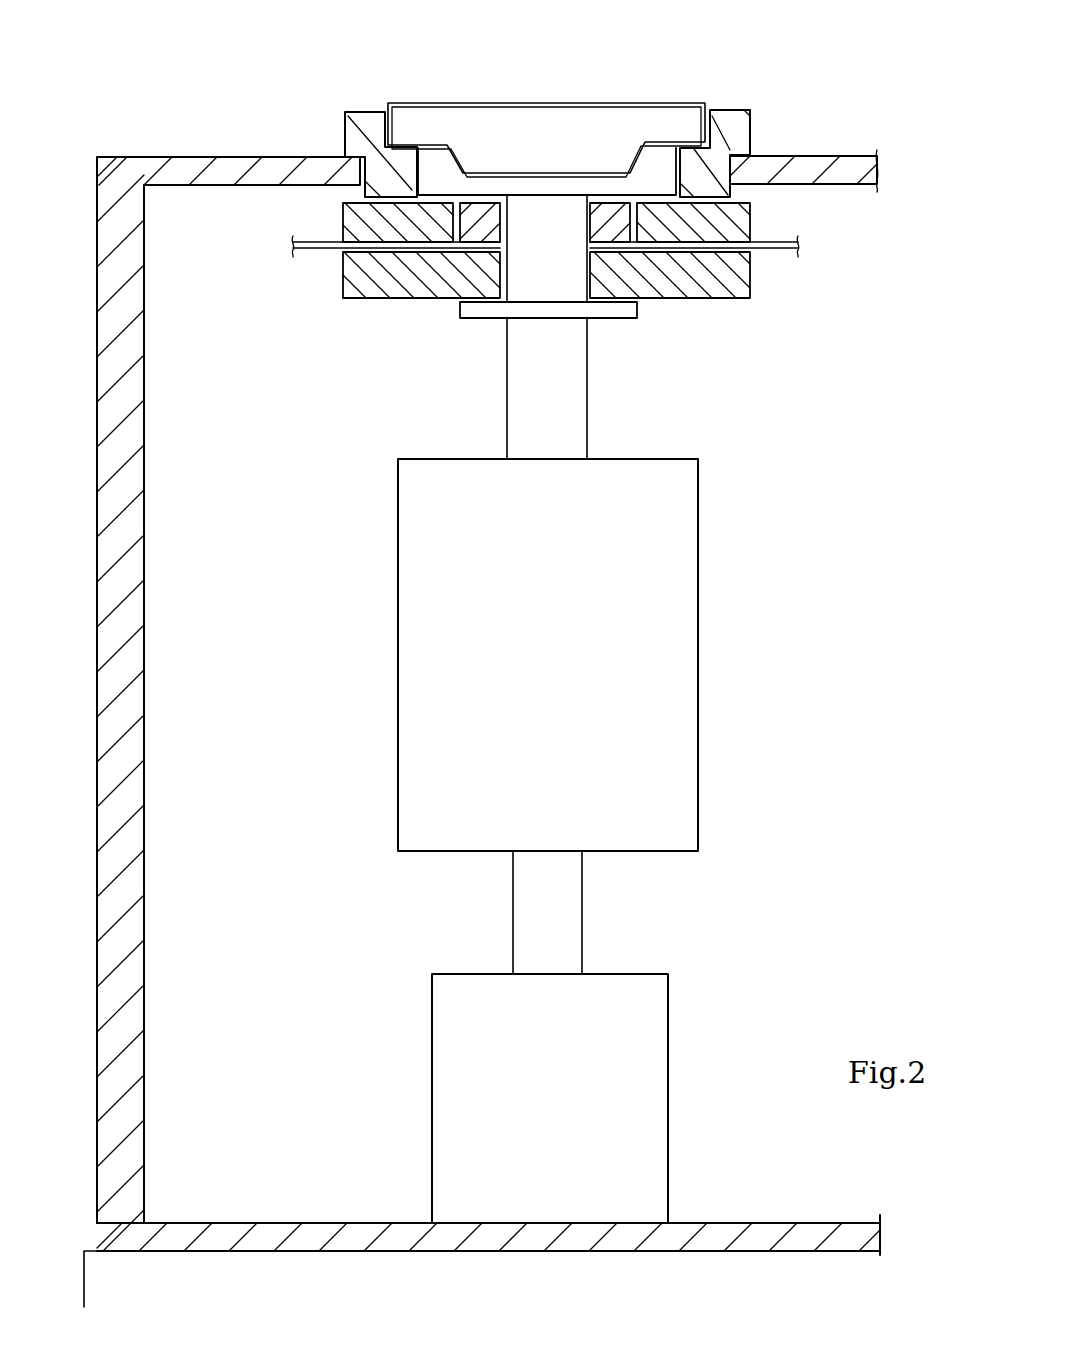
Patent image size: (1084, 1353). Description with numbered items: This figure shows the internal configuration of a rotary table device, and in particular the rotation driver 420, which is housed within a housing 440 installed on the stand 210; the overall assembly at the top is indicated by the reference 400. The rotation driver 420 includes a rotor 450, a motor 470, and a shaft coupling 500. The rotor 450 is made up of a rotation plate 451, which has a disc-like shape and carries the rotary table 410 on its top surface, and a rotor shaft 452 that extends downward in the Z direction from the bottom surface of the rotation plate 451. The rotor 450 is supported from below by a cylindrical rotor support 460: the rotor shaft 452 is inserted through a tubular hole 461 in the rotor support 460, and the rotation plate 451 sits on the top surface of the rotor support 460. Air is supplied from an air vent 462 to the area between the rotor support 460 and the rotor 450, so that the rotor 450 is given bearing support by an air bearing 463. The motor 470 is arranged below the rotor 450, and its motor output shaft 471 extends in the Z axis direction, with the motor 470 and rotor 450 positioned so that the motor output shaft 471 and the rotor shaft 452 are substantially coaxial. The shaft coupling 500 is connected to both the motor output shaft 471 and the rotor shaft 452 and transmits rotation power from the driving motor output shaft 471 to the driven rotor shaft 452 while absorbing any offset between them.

The stand 210 is at (780, 1220).
The valve unit 400 is at (562, 229).
The rotary table 410 is at (658, 110).
The rotation driver 420 is at (590, 281).
The housing 440 is at (228, 175).
The rotor 450 is at (547, 229).
The rotation plate 451 is at (500, 190).
The rotor shaft 452 is at (540, 203).
The rotor support 460 is at (366, 280).
The tubular hole 461 is at (512, 286).
The air vent 462 is at (313, 243).
The air bearing 463 is at (348, 197).
The motor 470 is at (640, 1072).
The motor output shaft 471 is at (568, 925).
The shaft coupling 500 is at (692, 500).